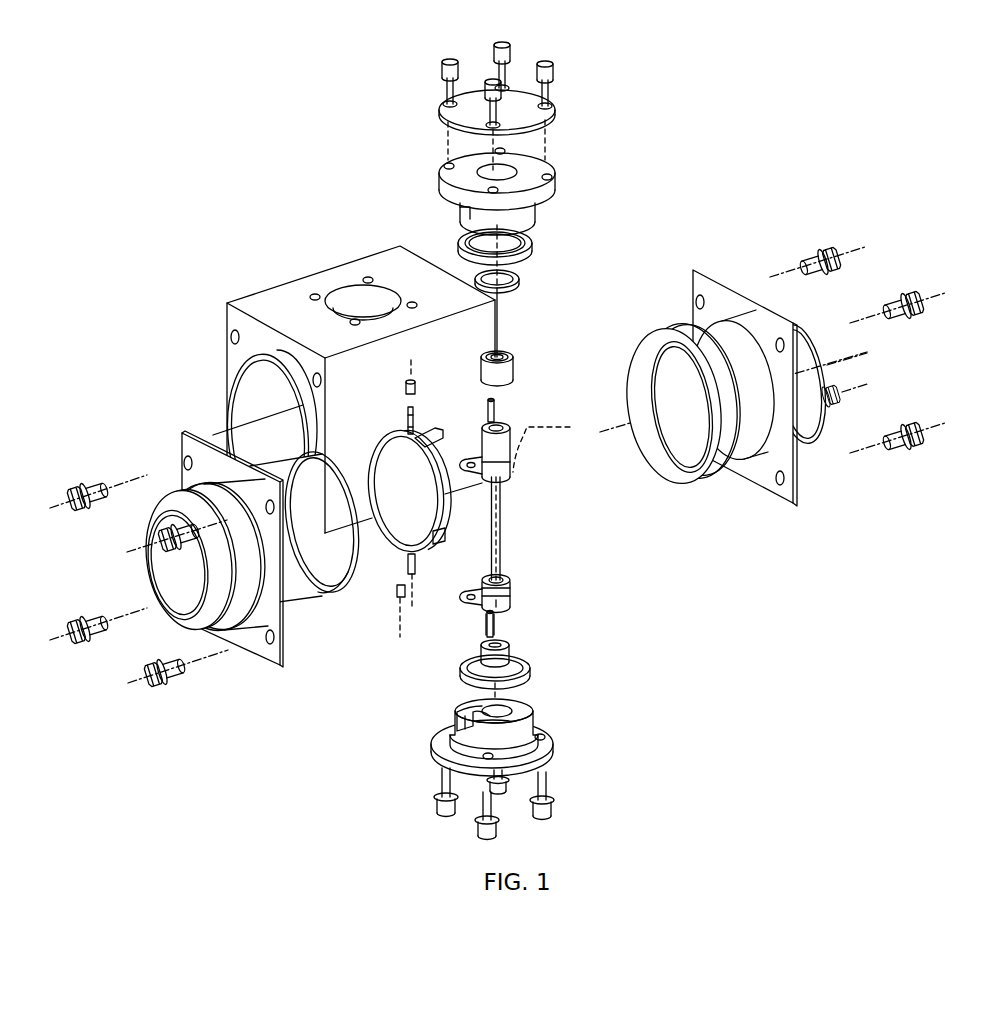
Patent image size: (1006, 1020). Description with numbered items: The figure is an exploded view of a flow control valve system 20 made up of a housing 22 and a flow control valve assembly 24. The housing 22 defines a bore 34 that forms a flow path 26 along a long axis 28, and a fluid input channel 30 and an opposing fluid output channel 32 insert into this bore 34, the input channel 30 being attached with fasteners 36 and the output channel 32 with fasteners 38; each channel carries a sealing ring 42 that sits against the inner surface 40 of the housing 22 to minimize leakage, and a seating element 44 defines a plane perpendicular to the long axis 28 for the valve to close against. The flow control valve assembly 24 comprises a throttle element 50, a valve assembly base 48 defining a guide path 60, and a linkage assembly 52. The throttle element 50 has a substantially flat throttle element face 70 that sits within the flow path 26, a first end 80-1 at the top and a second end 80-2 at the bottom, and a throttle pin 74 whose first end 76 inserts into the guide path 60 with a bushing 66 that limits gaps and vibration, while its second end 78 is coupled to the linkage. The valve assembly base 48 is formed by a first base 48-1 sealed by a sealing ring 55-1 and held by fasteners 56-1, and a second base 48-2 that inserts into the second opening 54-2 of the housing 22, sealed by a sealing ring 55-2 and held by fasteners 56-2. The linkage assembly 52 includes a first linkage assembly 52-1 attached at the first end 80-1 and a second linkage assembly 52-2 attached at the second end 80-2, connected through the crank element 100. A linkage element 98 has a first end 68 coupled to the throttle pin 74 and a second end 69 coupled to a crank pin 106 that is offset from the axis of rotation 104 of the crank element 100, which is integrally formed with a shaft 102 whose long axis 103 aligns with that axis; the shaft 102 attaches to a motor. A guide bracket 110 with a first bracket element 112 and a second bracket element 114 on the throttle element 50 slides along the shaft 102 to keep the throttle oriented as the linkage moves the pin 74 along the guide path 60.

The flow control valve system 20 is at (793, 172).
The housing 22 is at (343, 262).
The flow control valve assembly 24 is at (587, 132).
The flow path 26 is at (272, 380).
The long axis 28 is at (213, 420).
The fluid input channel 30 is at (680, 318).
The fluid output channel 32 is at (232, 653).
The bore 34 is at (232, 345).
The fasteners 36 is at (850, 265).
The fasteners 38 is at (135, 657).
The inner surface 40 is at (380, 306).
The sealing ring 42 is at (318, 470).
The seating element 44 is at (338, 593).
The valve assembly base 48 is at (545, 719).
The first base 48-1 is at (455, 732).
The second base 48-2 is at (555, 175).
The throttle element 50 is at (403, 460).
The linkage assembly 52 is at (520, 597).
The first linkage assembly 52-1 is at (483, 563).
The second linkage assembly 52-2 is at (513, 435).
The second opening 54-2 is at (310, 305).
The sealing ring 55-1 is at (530, 672).
The sealing ring 55-2 is at (538, 252).
The fasteners 56-1 is at (557, 782).
The fasteners 56-2 is at (555, 90).
The guide path 60 is at (455, 715).
The bushing 66 is at (401, 597).
The first end 68 is at (478, 615).
The second end 69 is at (510, 572).
The throttle element face 70 is at (405, 425).
The throttle pin 74 is at (397, 591).
The first end 76 is at (420, 570).
The second end 78 is at (409, 565).
The first end 80-1 is at (463, 537).
The second end 80-2 is at (427, 410).
The linkage element 98 is at (470, 590).
The crank element 100 is at (513, 585).
The shaft 102 is at (485, 465).
The long axis 103 is at (562, 443).
The axis of rotation 104 is at (505, 617).
The crank pin 106 is at (512, 648).
The guide bracket 110 is at (503, 361).
The first bracket element 112 is at (503, 398).
The second bracket element 114 is at (443, 422).